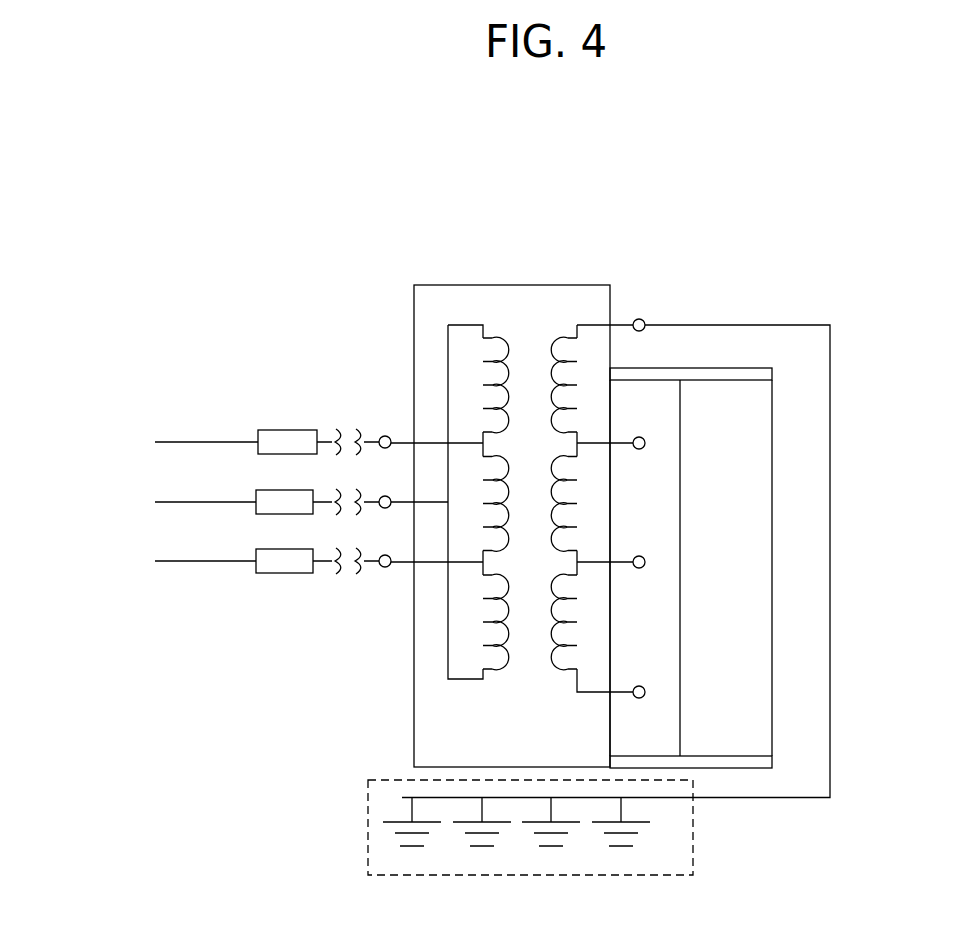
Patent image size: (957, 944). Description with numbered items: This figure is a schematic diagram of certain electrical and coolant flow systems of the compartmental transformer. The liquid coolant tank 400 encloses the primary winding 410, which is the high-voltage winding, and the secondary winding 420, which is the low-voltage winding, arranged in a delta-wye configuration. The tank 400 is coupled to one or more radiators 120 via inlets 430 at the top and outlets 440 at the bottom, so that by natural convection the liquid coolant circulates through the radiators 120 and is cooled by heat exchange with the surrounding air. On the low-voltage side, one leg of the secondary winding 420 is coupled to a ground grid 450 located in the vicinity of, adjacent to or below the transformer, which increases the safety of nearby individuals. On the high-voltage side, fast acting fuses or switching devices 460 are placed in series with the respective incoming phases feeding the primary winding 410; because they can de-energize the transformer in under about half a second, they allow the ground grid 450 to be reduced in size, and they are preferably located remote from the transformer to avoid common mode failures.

The liquid coolant tank 400 is at (507, 285).
The primary winding 410 is at (470, 325).
The secondary winding 420 is at (599, 330).
The inlets 430 is at (657, 368).
The outlets 440 is at (738, 768).
The radiators 120 is at (773, 580).
The ground grid 450 is at (368, 828).
The fast acting fuses or switching devices 460 is at (287, 430).